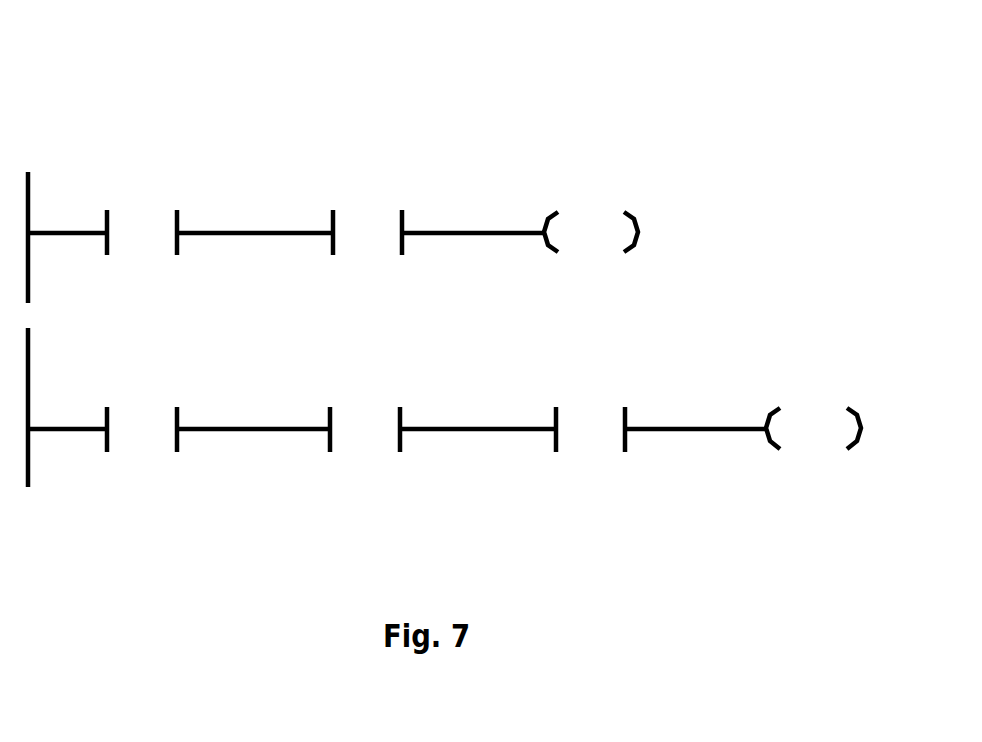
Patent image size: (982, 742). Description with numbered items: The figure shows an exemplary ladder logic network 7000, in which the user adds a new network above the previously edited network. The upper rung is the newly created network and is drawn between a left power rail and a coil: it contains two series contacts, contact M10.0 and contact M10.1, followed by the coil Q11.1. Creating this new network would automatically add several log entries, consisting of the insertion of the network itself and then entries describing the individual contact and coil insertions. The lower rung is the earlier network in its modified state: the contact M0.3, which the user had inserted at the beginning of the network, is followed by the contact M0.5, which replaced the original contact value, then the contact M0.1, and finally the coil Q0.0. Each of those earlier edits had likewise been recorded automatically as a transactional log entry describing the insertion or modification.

The ladder logic network 7000 is at (103, 54).
The contact M10.0 is at (142, 219).
The contact M10.1 is at (367, 219).
The coil Q11.1 is at (591, 217).
The contact M0.3 is at (142, 415).
The contact M0.5 is at (365, 415).
The contact M0.1 is at (590, 415).
The coil Q0.0 is at (813, 414).